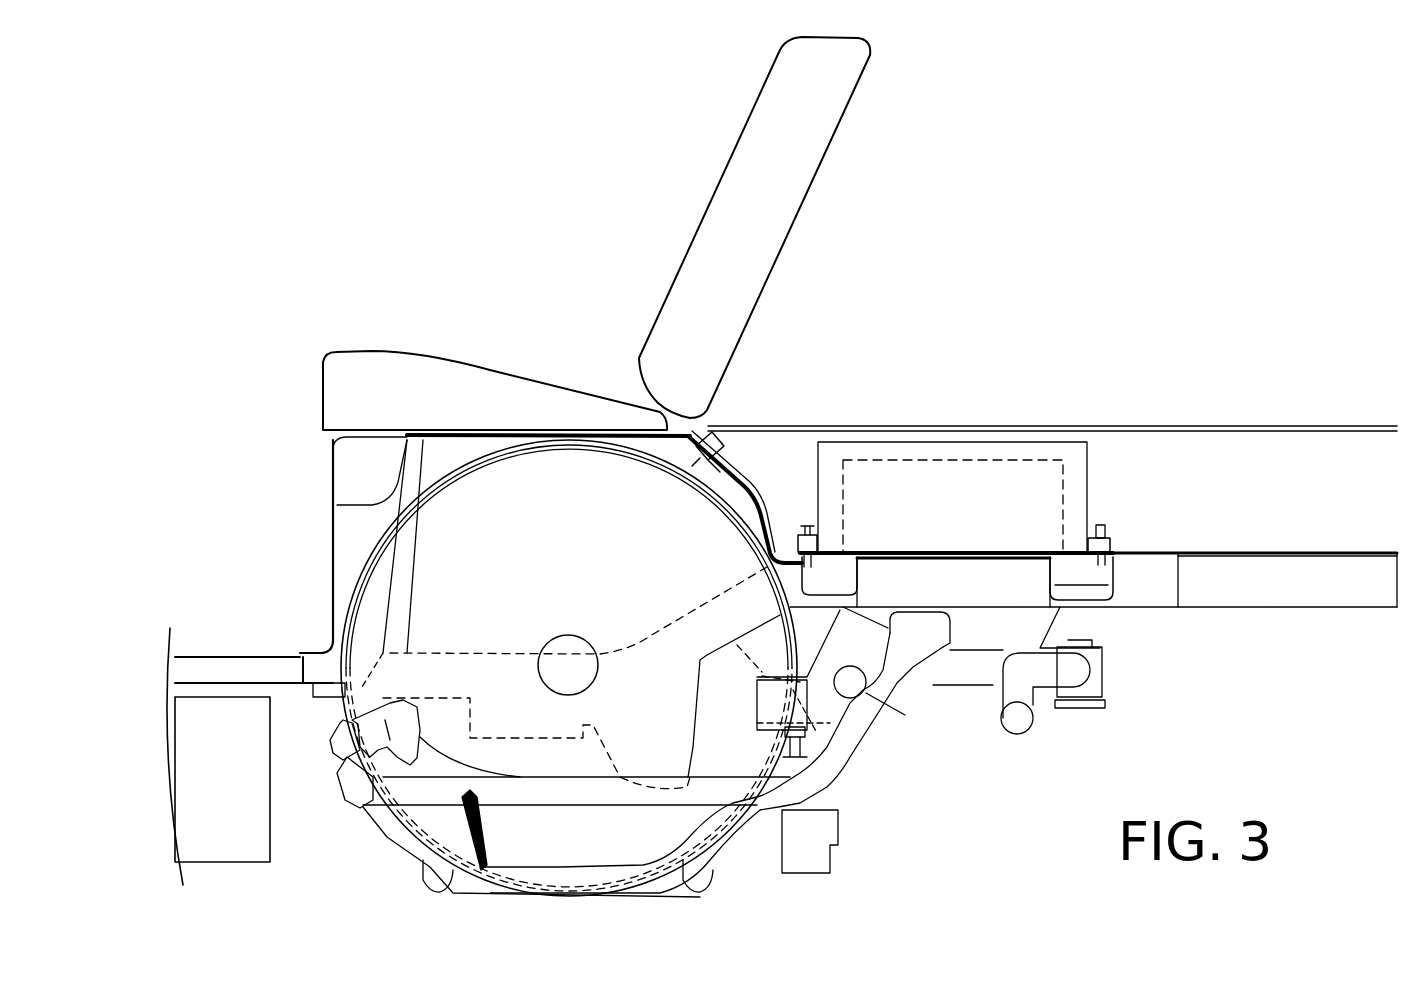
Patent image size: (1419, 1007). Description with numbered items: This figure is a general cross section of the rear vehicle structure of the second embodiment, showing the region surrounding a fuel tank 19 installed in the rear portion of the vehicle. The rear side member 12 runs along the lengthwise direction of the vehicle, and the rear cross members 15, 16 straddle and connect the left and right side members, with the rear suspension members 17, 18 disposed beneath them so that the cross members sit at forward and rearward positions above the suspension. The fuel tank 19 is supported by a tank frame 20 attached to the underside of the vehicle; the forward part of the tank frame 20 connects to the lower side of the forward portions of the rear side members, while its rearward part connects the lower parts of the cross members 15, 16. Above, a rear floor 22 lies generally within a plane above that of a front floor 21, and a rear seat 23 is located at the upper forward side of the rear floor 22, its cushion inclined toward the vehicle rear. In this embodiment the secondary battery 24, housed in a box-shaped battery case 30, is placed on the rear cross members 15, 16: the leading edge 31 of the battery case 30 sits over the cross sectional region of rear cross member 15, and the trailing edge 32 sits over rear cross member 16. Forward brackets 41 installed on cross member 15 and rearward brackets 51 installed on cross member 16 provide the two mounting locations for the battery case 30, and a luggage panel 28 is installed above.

The rear side member 12 is at (1165, 560).
The rear cross member 15 is at (735, 598).
The rear cross member 16 is at (1113, 607).
The rear suspension member 17 is at (857, 690).
The rear suspension member 18 is at (1020, 735).
The fuel tank 19 is at (427, 583).
The tank frame 20 is at (818, 787).
The front floor 21 is at (237, 655).
The rear floor 22 is at (1262, 550).
The rear seat 23 is at (580, 270).
The secondary battery 24 is at (1033, 459).
The luggage panel 28 is at (1150, 427).
The battery case 30 is at (915, 441).
The leading edge 31 is at (790, 544).
The trailing edge 32 is at (1112, 547).
The forward bracket 41 is at (775, 578).
The rearward bracket 51 is at (1117, 580).